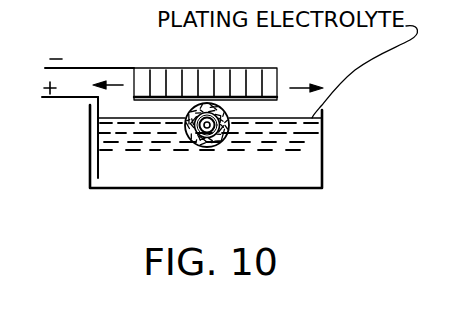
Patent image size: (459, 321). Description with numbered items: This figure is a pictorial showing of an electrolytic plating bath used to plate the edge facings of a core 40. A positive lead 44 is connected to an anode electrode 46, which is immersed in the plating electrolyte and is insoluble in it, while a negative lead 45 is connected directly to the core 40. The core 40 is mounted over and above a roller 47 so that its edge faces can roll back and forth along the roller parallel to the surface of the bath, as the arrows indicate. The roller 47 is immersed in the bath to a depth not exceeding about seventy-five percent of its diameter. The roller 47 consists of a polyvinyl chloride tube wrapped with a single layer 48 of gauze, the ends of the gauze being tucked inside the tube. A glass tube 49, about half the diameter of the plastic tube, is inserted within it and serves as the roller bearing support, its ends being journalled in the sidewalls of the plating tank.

The core 40 is at (278, 67).
The positive lead 44 is at (62, 97).
The negative lead 45 is at (69, 67).
The anode electrode 46 is at (100, 169).
The roller 47 is at (228, 112).
The layer of gauze 48 is at (211, 147).
The glass tube 49 is at (190, 146).